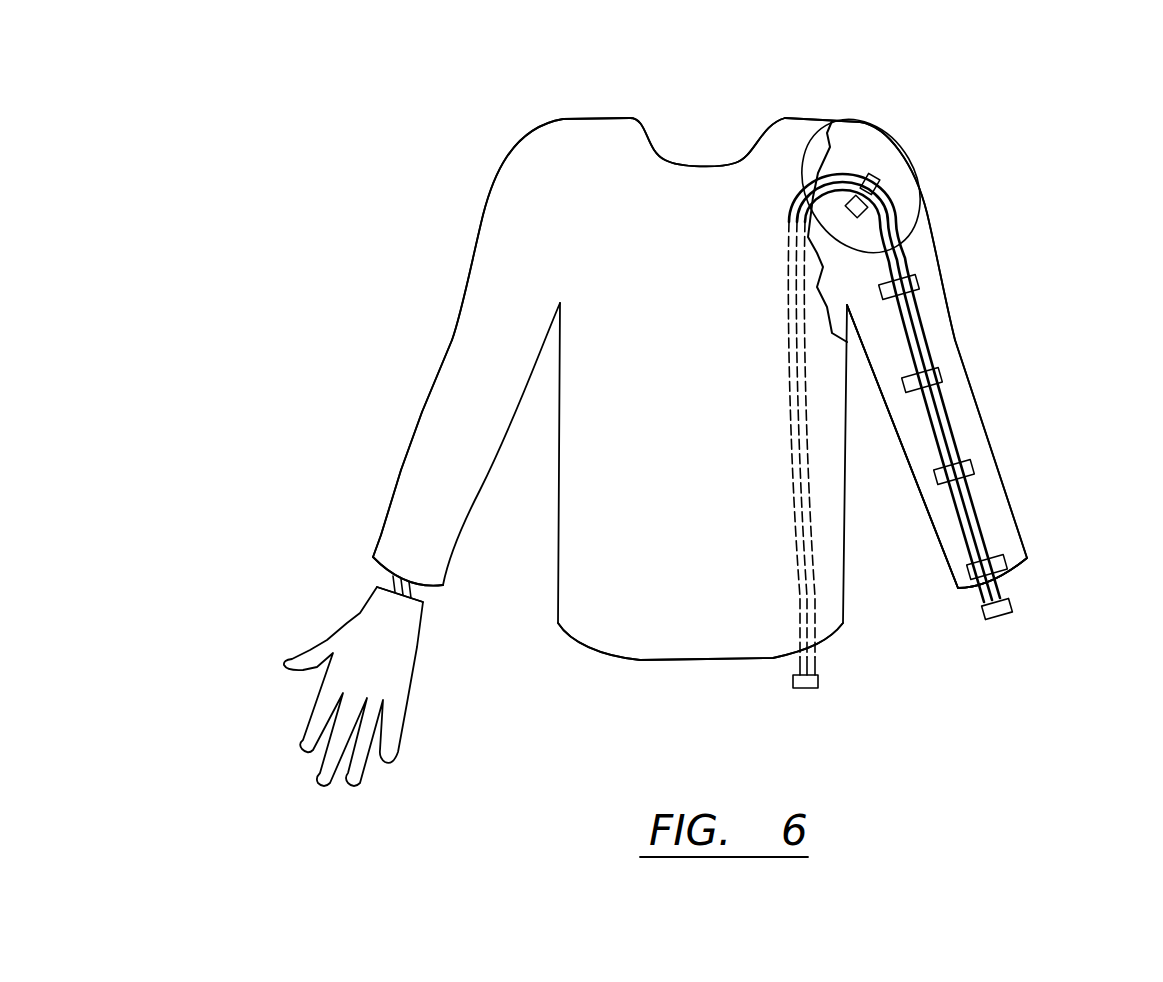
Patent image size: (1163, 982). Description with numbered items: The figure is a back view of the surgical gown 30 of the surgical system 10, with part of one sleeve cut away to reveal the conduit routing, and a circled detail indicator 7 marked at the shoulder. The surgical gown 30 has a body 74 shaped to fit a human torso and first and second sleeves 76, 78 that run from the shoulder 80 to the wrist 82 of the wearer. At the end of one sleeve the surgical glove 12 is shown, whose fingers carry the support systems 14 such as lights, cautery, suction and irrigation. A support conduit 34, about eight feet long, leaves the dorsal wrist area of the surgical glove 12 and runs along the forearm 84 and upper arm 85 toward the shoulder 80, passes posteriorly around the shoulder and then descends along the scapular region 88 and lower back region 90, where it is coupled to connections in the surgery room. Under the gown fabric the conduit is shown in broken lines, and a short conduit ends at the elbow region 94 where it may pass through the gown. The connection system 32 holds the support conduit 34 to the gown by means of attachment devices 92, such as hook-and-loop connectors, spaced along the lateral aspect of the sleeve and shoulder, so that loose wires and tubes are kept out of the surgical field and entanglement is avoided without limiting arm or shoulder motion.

The surgical system 10 is at (449, 137).
The surgical glove 12 is at (360, 620).
The support systems 14 is at (302, 717).
The surgical gown 30 is at (961, 149).
The connection system 32 is at (996, 158).
The support conduit 34 is at (813, 665).
The body 74 is at (620, 493).
The first sleeve 76 is at (975, 437).
The second sleeve 78 is at (473, 407).
The shoulder 80 is at (578, 163).
The wrist 82 is at (417, 538).
The forearm 84 is at (425, 478).
The upper arm 85 is at (502, 280).
The scapular region 88 is at (618, 173).
The lower back region 90 is at (723, 577).
The attachment devices 92 is at (880, 177).
The elbow region 94 is at (470, 343).
The detail view indicator for FIG. 7 is at (806, 195).